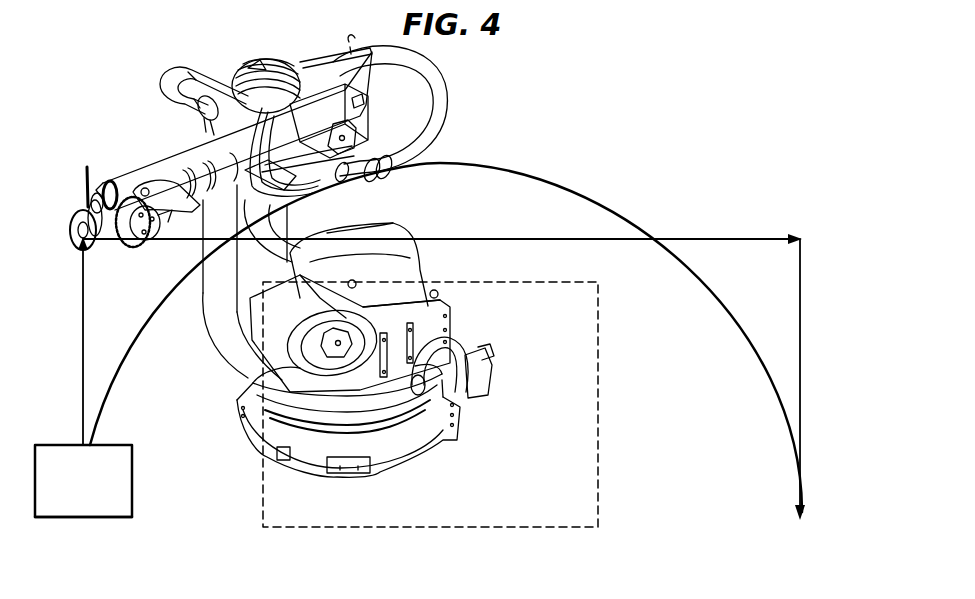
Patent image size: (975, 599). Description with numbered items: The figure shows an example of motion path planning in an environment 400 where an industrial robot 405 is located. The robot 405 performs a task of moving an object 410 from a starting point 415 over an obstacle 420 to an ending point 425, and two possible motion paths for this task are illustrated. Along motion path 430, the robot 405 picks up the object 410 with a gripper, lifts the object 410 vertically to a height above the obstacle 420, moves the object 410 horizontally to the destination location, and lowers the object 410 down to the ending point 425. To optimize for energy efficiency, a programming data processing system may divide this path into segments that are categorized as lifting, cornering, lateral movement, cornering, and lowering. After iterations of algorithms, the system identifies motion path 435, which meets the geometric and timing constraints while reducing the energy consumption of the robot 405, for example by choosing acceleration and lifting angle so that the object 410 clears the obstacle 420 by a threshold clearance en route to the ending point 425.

The environment 400 is at (688, 102).
The industrial robot 405 is at (468, 84).
The object 410 is at (133, 471).
The starting point 415 is at (83, 518).
The obstacle 420 is at (508, 528).
The ending point 425 is at (801, 518).
The motion path 430 is at (705, 238).
The motion path 435 is at (538, 170).